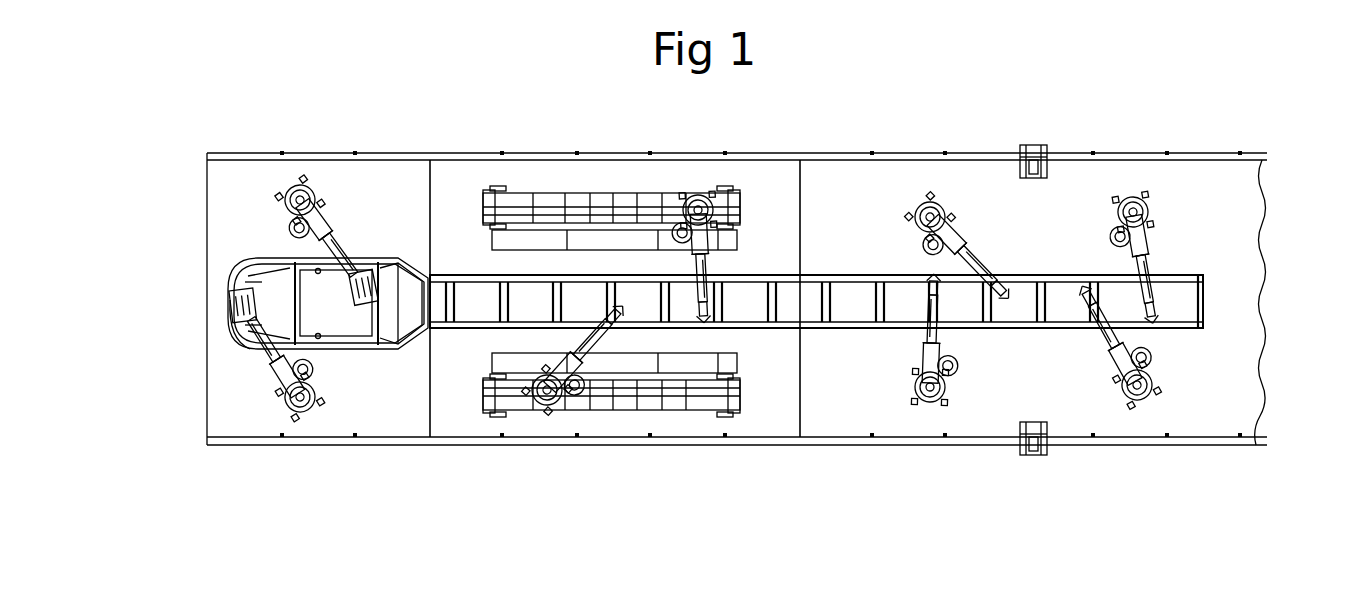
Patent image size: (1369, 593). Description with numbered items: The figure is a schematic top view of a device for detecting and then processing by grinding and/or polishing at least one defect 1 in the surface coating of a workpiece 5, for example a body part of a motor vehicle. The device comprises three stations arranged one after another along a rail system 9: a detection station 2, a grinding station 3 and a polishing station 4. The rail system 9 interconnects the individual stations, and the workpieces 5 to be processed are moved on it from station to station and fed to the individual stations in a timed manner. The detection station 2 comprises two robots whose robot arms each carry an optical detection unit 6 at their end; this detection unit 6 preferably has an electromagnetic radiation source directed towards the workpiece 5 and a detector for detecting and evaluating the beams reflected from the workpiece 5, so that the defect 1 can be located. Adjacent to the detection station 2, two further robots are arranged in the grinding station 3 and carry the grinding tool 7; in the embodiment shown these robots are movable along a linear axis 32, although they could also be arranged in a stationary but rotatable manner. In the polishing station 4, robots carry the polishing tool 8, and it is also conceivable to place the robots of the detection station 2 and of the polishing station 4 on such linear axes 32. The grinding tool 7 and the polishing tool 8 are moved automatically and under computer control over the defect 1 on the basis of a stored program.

The defect 1 is at (415, 282).
The detection station 2 is at (360, 468).
The grinding station 3 is at (742, 452).
The polishing station 4 is at (1202, 462).
The workpiece 5 is at (245, 348).
The detection unit 6 is at (337, 220).
The grinding tool 7 is at (710, 197).
The polishing tool 8 is at (938, 200).
The rail system 9 is at (1032, 296).
The linear axis 32 is at (553, 207).